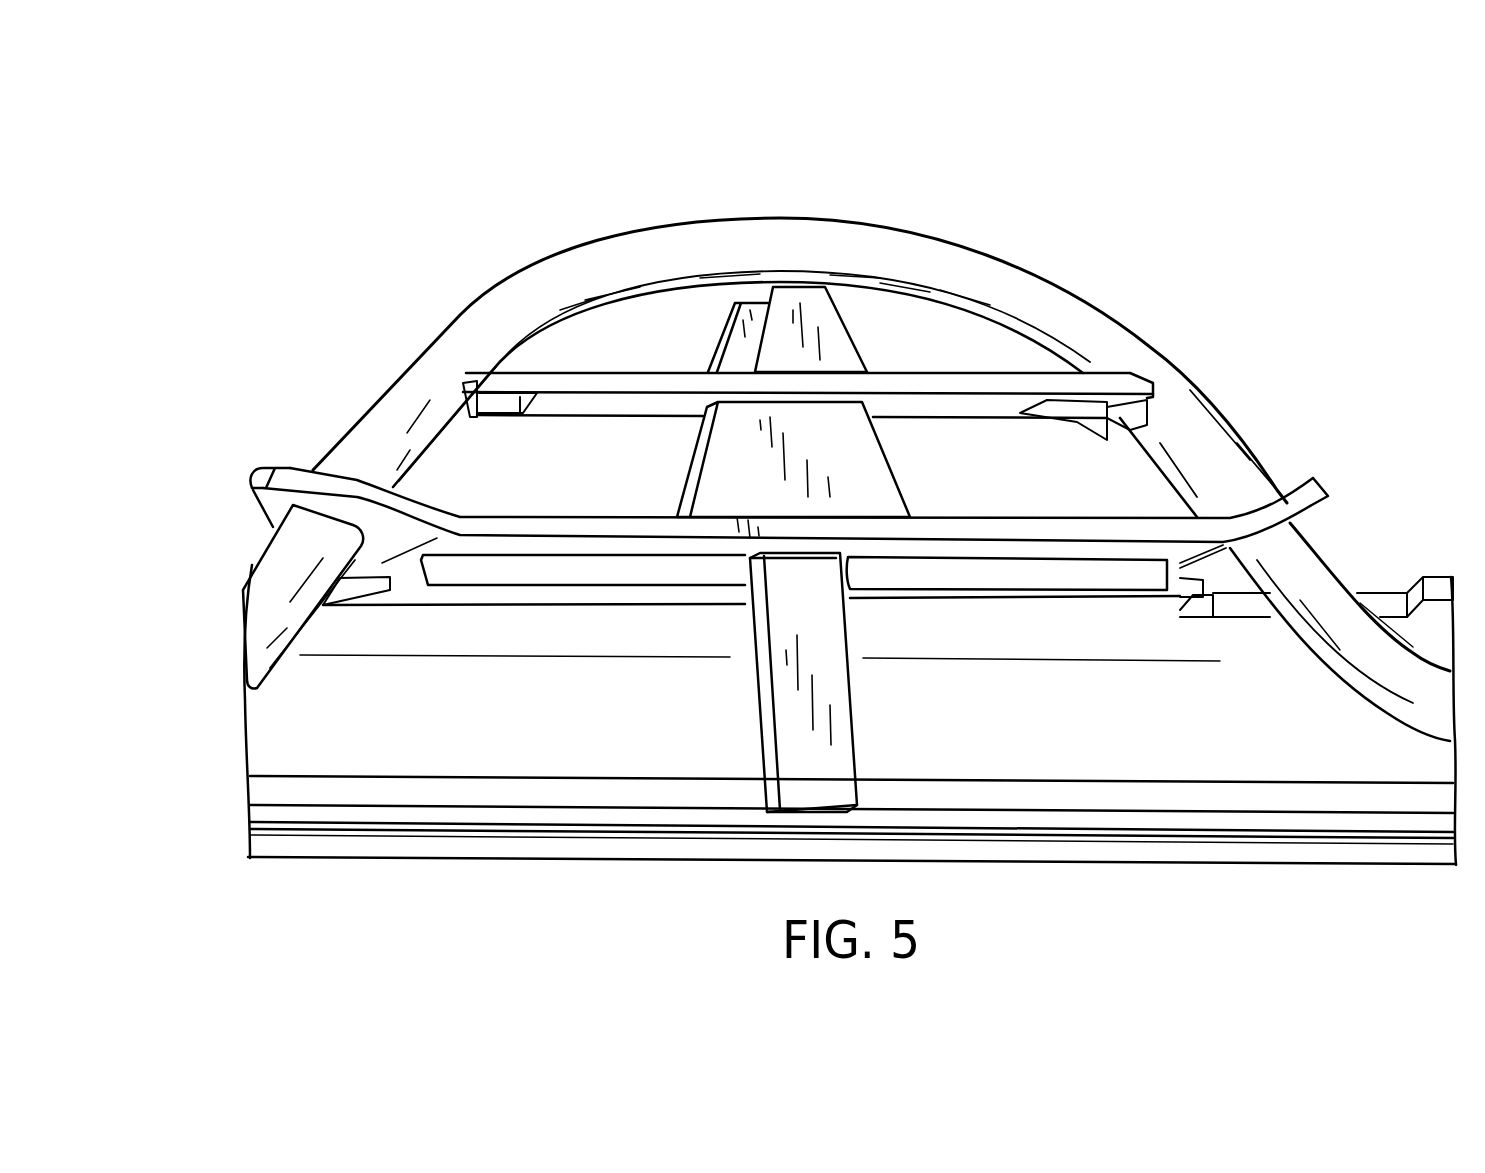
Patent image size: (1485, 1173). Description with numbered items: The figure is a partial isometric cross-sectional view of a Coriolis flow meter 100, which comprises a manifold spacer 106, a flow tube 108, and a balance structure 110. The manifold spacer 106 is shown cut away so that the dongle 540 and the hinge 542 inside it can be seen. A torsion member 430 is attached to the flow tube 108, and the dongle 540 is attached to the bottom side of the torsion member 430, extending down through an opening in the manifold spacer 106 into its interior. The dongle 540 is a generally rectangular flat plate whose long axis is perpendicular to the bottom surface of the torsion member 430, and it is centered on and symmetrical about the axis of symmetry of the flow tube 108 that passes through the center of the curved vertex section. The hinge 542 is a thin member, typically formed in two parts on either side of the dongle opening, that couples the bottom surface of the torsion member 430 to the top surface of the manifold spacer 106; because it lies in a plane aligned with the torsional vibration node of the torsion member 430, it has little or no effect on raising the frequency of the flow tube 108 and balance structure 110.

The Coriolis flow meter 100 is at (1087, 175).
The manifold spacer 106 is at (440, 858).
The flow tube 108 is at (1232, 427).
The balance structure 110 is at (565, 458).
The torsion member 430 is at (258, 480).
The dongle 540 is at (850, 707).
The hinge 542 is at (430, 562).